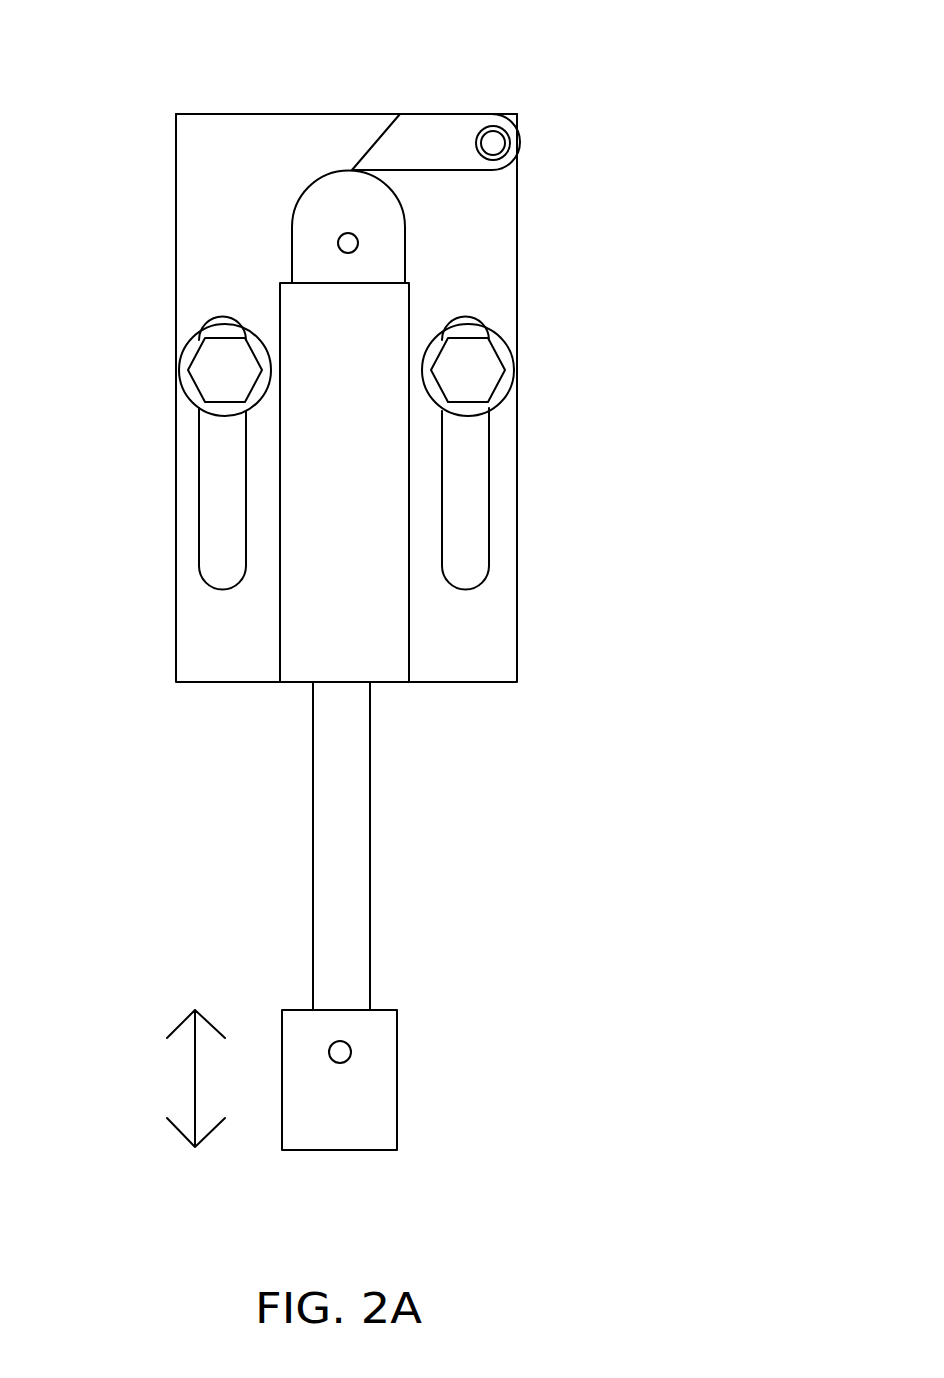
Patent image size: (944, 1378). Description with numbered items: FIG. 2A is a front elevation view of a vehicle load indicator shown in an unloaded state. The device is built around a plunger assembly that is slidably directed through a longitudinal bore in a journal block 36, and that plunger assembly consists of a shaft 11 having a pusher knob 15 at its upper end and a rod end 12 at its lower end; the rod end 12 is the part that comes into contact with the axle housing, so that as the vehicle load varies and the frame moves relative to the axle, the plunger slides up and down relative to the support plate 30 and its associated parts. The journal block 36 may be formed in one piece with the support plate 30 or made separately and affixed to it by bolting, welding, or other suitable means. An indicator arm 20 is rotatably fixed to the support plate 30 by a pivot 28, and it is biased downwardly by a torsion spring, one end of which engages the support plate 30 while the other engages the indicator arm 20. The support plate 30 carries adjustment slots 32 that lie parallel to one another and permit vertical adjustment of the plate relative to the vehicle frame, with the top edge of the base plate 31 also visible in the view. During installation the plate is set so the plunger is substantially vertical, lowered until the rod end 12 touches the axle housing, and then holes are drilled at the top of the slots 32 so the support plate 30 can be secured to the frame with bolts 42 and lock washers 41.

The shaft 11 is at (371, 783).
The rod end 12 is at (397, 1080).
The pusher knob 15 is at (305, 188).
The indicator arm 20 is at (435, 143).
The pivot 28 is at (497, 139).
The support plate 30 is at (517, 651).
The top edge of base plate 31 is at (270, 112).
The adjustment slots 32 is at (198, 545).
The journal block 36 is at (278, 645).
The lock washers 41 is at (185, 400).
The bolts 42 is at (218, 365).